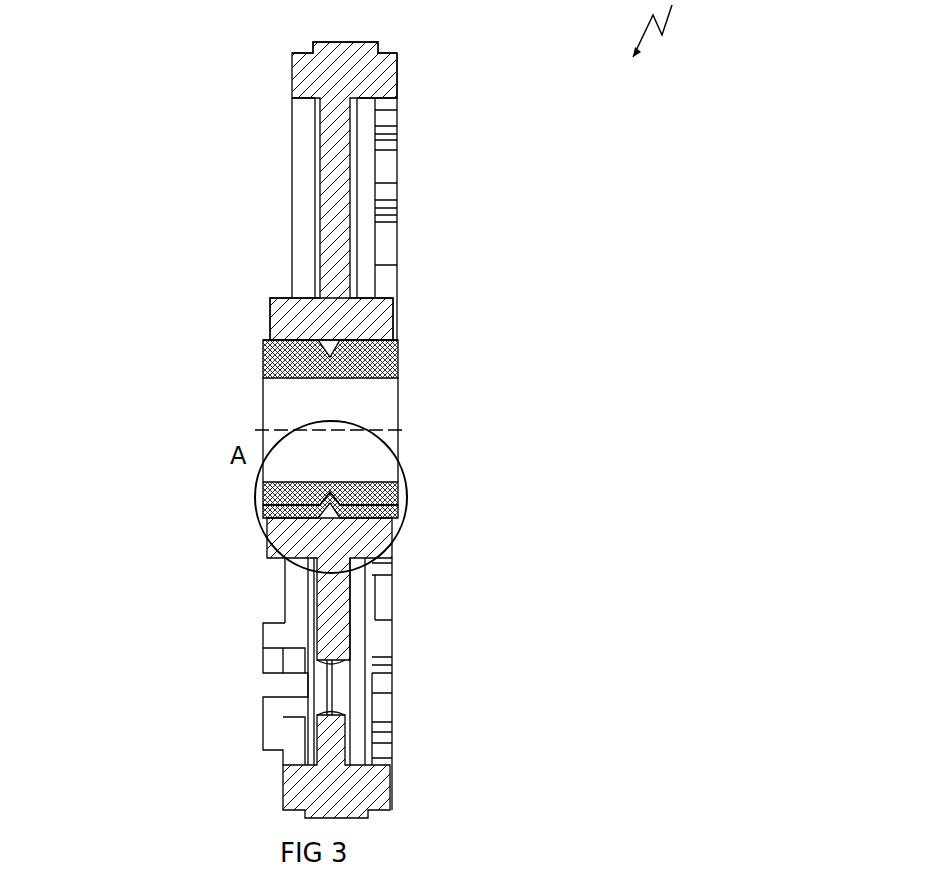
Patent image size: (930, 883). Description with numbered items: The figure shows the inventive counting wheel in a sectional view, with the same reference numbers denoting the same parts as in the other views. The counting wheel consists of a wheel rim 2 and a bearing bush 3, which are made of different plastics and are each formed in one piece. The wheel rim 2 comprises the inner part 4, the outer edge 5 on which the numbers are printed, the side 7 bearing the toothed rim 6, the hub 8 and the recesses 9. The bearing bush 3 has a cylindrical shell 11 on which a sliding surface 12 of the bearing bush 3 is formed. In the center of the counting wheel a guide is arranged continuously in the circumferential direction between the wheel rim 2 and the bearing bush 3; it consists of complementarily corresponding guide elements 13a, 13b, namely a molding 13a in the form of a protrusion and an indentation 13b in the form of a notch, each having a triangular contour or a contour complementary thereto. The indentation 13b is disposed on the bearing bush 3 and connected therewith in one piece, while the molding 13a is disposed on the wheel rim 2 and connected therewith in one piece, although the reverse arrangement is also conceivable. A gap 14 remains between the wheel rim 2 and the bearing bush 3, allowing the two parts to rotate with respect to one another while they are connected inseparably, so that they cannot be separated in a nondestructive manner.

The wheel rim 2 is at (345, 87).
The bearing bush 3 is at (266, 366).
The inner part 4 is at (292, 173).
The outer edge 5 is at (292, 52).
The toothed rim 6 is at (388, 117).
The side 7 is at (388, 200).
The hub 8 is at (270, 313).
The recesses 9 is at (332, 682).
The cylindrical shell 11 is at (398, 371).
The sliding surface 12 is at (398, 342).
The molding 13a is at (265, 518).
The indentation 13b is at (265, 503).
The gap 14 is at (398, 522).